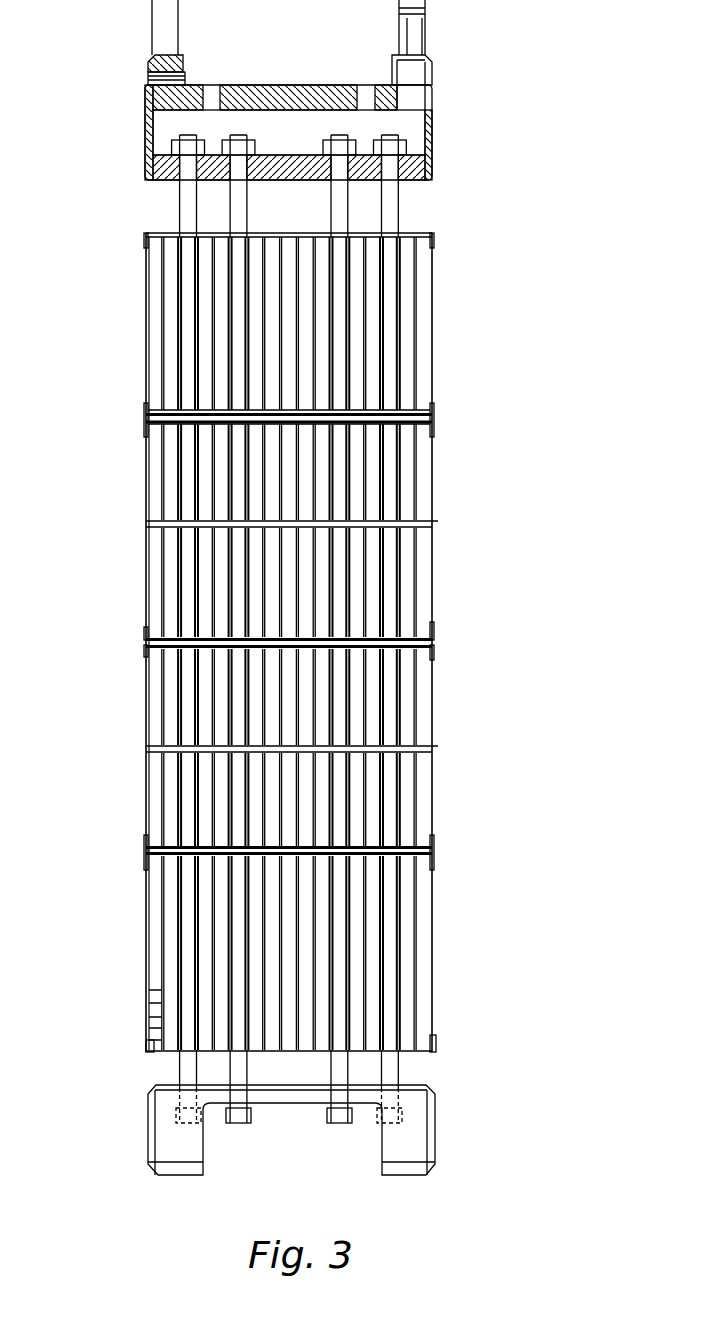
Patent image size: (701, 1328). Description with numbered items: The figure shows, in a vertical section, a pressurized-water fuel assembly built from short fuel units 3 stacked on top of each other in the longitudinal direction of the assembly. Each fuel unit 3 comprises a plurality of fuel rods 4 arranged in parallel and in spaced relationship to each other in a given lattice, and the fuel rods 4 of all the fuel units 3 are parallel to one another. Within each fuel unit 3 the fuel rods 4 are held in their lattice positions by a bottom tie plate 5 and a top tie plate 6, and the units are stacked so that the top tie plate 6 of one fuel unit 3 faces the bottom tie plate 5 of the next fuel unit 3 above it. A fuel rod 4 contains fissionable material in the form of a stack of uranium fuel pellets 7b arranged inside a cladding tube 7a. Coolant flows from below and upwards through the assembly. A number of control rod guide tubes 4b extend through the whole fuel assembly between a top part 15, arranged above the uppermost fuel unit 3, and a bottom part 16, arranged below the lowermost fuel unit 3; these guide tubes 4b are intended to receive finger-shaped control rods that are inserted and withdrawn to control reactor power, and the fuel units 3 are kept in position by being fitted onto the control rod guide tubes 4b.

The fuel unit 3 is at (445, 693).
The fuel rod 4 is at (187, 364).
The control rod guide tube 4b is at (337, 197).
The bottom tie plate 5 is at (146, 633).
The top tie plate 6 is at (146, 654).
The cladding tube 7a is at (150, 953).
The fuel pellets 7b is at (148, 1028).
The top part 15 is at (432, 167).
The bottom part 16 is at (417, 1139).